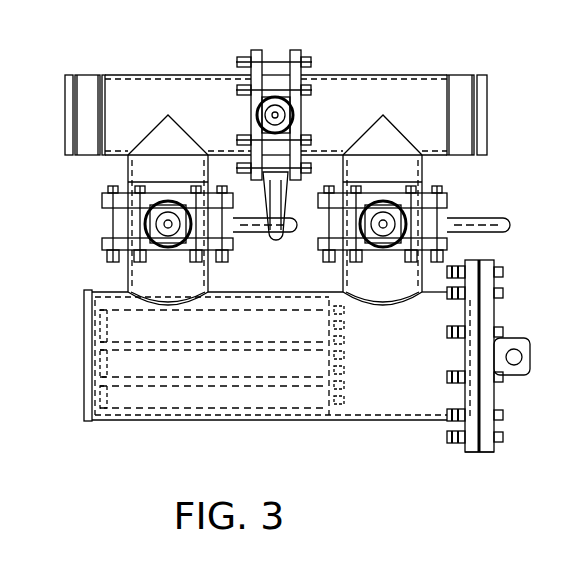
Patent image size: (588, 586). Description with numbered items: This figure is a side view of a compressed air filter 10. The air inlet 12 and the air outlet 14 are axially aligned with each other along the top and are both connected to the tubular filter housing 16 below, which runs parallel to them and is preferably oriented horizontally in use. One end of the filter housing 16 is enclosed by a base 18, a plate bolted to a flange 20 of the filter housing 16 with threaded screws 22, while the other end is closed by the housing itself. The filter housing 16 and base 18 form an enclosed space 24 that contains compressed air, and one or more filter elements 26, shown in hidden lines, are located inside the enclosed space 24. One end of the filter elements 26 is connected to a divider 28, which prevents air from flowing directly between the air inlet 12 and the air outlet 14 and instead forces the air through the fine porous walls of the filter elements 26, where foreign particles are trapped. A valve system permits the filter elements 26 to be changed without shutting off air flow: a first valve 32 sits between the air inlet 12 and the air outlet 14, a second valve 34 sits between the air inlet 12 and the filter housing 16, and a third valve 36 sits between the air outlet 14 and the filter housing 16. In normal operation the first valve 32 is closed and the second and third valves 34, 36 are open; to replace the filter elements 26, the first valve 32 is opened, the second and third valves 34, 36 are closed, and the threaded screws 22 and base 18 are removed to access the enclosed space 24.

The compressed air filter 10 is at (205, 52).
The air inlet 12 is at (487, 118).
The air outlet 14 is at (67, 115).
The tubular filter housing 16 is at (268, 422).
The base 18 is at (492, 396).
The flange 20 is at (470, 453).
The threaded screws 22 is at (505, 292).
The enclosed space 24 is at (254, 304).
The filter elements 26 is at (118, 327).
The divider 28 is at (333, 420).
The first valve 32 is at (306, 53).
The second valve 34 is at (450, 206).
The third valve 36 is at (102, 197).